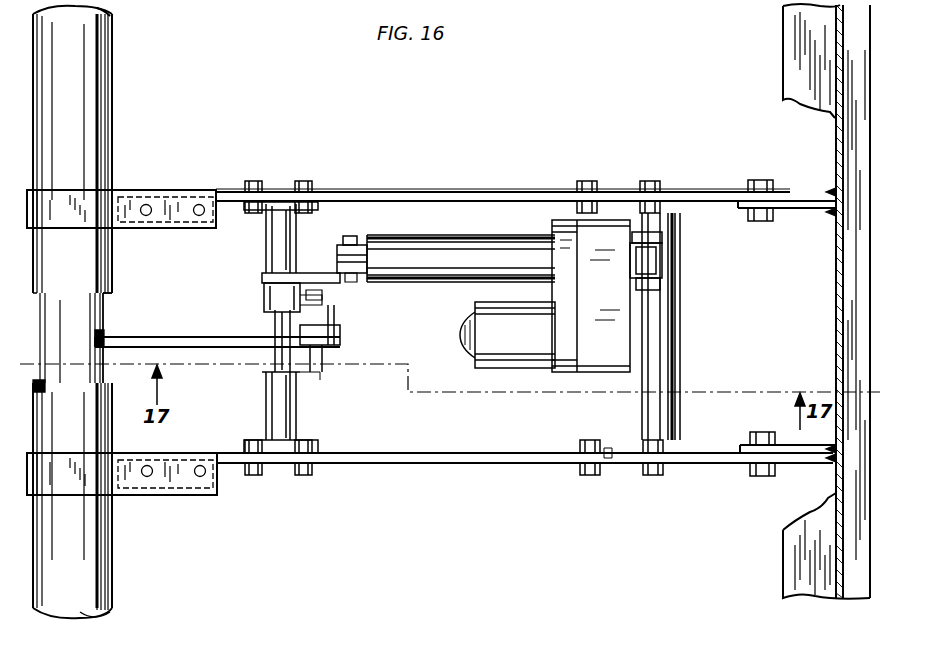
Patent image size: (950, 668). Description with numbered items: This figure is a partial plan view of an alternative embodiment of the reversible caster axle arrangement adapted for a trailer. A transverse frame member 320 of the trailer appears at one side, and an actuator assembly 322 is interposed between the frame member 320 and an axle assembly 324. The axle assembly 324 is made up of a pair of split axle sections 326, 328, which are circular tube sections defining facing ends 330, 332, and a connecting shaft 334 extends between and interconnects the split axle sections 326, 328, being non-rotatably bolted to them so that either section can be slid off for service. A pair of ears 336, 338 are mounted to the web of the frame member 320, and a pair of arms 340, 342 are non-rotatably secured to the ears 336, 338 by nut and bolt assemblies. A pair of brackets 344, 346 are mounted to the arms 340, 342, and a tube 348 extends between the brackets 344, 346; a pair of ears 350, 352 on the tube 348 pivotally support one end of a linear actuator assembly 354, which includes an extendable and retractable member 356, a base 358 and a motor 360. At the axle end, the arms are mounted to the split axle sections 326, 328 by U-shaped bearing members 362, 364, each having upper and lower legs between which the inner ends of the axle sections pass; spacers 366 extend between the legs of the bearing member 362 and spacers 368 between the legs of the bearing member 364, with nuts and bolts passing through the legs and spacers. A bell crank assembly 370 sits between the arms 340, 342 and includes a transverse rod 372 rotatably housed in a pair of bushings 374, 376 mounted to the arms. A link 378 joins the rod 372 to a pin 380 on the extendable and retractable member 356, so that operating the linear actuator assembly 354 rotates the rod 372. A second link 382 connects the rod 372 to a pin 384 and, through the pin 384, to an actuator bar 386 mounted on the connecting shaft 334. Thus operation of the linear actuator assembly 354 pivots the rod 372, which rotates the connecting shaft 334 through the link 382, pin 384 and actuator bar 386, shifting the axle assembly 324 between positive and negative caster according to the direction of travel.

The transverse frame member 320 is at (783, 38).
The actuator assembly 322 is at (452, 175).
The axle assembly 324 is at (110, 44).
The split axle section 326 is at (118, 95).
The split axle section 328 is at (118, 588).
The facing end 330 is at (110, 296).
The facing end 332 is at (135, 388).
The connecting shaft 334 is at (104, 328).
The ear 336 is at (815, 200).
The ear 338 is at (806, 464).
The arm 340 is at (700, 192).
The arm 342 is at (712, 464).
The bracket 344 is at (612, 200).
The bracket 346 is at (610, 452).
The tube 348 is at (682, 375).
The ear 350 is at (662, 236).
The ear 352 is at (662, 278).
The linear actuator assembly 354 is at (487, 229).
The extendable and retractable member 356 is at (368, 210).
The base 358 is at (588, 376).
The motor 360 is at (497, 367).
The U-shaped bearing member 362 is at (120, 190).
The U-shaped bearing member 364 is at (118, 496).
The spacers 366 is at (200, 204).
The spacers 368 is at (198, 480).
The bell crank assembly 370 is at (319, 393).
The transverse rod 372 is at (270, 365).
The bushing 374 is at (301, 244).
The bushing 376 is at (300, 421).
The link 378 is at (337, 285).
The pin 380 is at (342, 202).
The second link 382 is at (338, 310).
The pin 384 is at (298, 298).
The actuator bar 386 is at (208, 350).